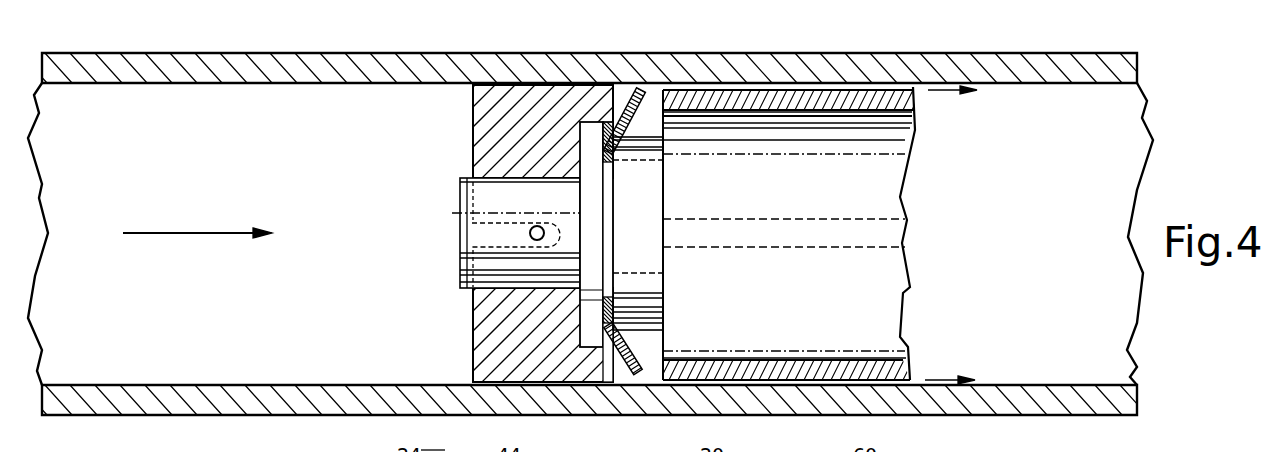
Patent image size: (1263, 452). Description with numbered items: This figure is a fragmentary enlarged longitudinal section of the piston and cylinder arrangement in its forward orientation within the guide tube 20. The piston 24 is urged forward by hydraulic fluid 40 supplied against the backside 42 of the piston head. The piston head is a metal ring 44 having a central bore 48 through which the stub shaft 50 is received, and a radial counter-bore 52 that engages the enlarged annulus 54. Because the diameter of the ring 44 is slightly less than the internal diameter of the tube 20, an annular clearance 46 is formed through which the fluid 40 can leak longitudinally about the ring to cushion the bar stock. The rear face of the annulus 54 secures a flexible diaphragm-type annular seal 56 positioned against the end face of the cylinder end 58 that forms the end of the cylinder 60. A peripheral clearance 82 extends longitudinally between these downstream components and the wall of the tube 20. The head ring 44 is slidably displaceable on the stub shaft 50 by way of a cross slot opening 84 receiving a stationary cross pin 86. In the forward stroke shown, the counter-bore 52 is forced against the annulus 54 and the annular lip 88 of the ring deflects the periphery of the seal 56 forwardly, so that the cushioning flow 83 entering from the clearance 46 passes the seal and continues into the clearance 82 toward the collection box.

The guide tube 20 is at (660, 68).
The piston 24 is at (486, 72).
The hydraulic fluid 40 is at (197, 232).
The backside of the piston head 42 is at (473, 137).
The metal ring 44 is at (527, 100).
The annular clearance 46 is at (478, 384).
The central bore 48 is at (503, 282).
The stub shaft 50 is at (467, 262).
The radial counter-bore 52 is at (590, 165).
The enlarged annulus 54 is at (606, 365).
The annular seal 56 is at (633, 362).
The cylinder end 58 is at (648, 207).
The cylinder 60 is at (817, 100).
The peripheral clearance 82 is at (922, 375).
The cushioning flow 83 is at (942, 377).
The cross slot opening 84 is at (480, 237).
The cross pin 86 is at (536, 226).
The annular lip 88 is at (628, 88).